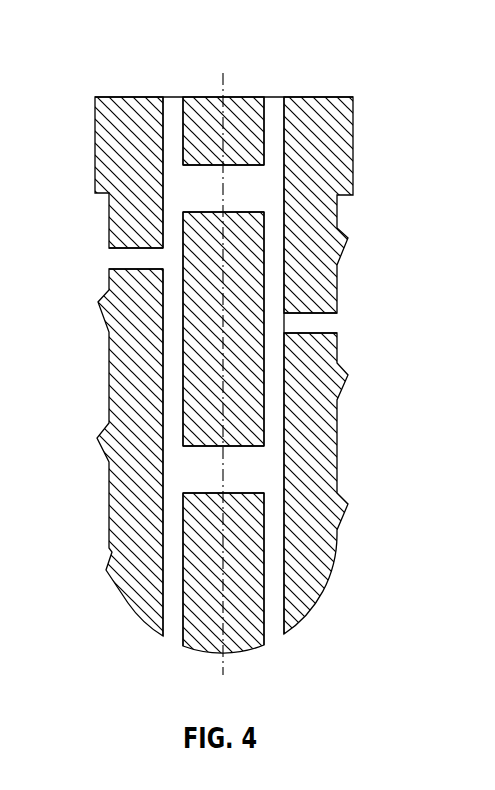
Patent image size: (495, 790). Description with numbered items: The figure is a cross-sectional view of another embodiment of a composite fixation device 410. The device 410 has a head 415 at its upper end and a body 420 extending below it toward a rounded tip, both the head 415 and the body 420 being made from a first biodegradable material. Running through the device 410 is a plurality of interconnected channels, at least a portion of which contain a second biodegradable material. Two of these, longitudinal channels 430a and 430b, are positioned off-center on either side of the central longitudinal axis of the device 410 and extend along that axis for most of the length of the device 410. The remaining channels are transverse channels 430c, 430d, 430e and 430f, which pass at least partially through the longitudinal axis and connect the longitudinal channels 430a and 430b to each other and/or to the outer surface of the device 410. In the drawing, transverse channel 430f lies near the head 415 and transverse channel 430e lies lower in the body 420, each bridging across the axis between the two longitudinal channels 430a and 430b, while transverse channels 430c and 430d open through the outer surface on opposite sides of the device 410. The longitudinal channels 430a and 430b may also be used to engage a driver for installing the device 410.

The device 410 is at (93, 79).
The head 415 is at (354, 122).
The body 420 is at (338, 477).
The longitudinal channel 430a is at (275, 268).
The longitudinal channel 430b is at (168, 371).
The transverse channel 430c is at (330, 326).
The transverse channel 430d is at (118, 260).
The transverse channel 430e is at (250, 470).
The transverse channel 430f is at (247, 186).